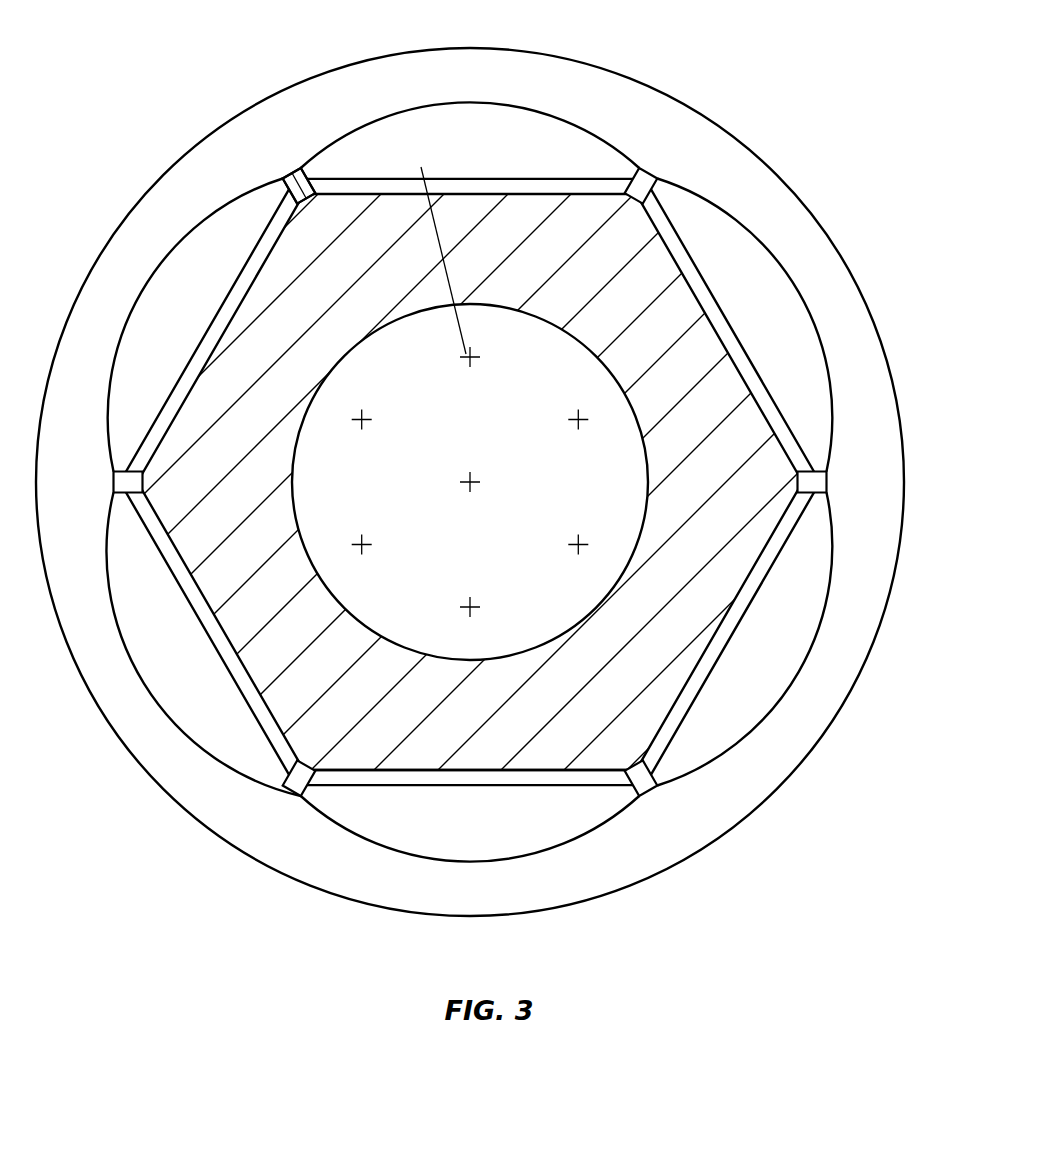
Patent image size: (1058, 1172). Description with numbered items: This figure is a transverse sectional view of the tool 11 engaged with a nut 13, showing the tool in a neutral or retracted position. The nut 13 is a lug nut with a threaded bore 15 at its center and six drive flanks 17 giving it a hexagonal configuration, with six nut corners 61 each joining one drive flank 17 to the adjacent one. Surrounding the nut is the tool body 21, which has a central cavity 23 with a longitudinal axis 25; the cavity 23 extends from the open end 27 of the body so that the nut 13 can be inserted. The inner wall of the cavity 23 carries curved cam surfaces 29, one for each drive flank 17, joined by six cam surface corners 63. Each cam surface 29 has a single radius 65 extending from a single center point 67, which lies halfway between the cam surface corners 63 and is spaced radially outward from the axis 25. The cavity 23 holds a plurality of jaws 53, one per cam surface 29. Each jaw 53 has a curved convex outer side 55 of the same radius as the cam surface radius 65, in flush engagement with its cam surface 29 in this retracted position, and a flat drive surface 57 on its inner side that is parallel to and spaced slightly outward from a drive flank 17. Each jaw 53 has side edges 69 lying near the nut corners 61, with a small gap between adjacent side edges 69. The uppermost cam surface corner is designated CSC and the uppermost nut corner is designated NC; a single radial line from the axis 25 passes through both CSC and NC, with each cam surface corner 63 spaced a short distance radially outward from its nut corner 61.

The tool 11 is at (470, 494).
The nut 13 is at (529, 500).
The threaded bore 15 is at (630, 422).
The drive flanks 17 is at (722, 623).
The tool body 21 is at (783, 785).
The central cavity 23 is at (545, 846).
The longitudinal axis 25 is at (465, 487).
The open end 27 is at (153, 218).
The cam surfaces 29 is at (218, 750).
The jaws 53 is at (155, 303).
The outer side 55 is at (160, 702).
The drive surface 57 is at (398, 757).
The nut corners 61 is at (640, 195).
The cam surface corners 63 is at (660, 780).
The radius 65 is at (410, 115).
The center point 67 is at (464, 356).
The side edge 69 is at (296, 792).
The cam surface corner CSC is at (300, 172).
The nut corner NC is at (298, 176).